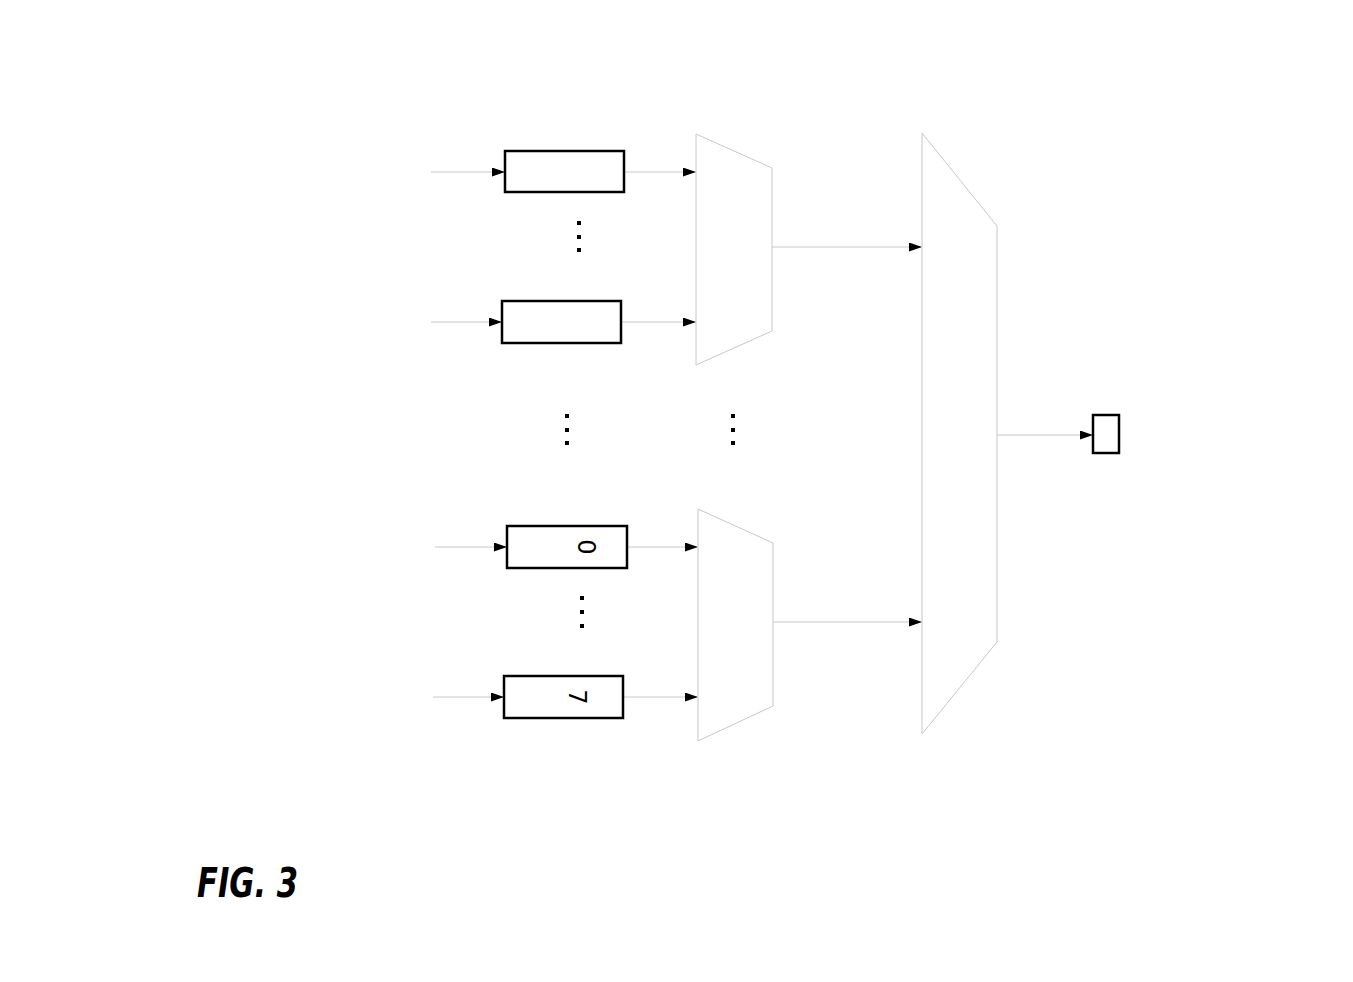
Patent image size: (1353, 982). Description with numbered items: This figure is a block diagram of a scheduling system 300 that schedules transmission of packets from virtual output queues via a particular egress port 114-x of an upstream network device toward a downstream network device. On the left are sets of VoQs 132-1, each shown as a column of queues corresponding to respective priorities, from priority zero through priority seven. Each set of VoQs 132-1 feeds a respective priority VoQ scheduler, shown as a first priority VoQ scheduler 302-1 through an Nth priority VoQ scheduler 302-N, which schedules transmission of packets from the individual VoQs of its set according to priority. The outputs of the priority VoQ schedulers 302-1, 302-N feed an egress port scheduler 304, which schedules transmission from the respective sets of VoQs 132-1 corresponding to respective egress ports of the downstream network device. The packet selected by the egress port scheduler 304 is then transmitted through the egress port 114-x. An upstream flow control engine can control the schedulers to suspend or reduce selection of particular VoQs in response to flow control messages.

The scheduling system 300 is at (1238, 45).
The set of VoQs 132-1 is at (554, 87).
The priority VoQ scheduler 302-1 is at (735, 148).
The priority VoQ scheduler 302-N is at (739, 523).
The egress port scheduler 304 is at (958, 178).
The egress port 114-x is at (1110, 415).